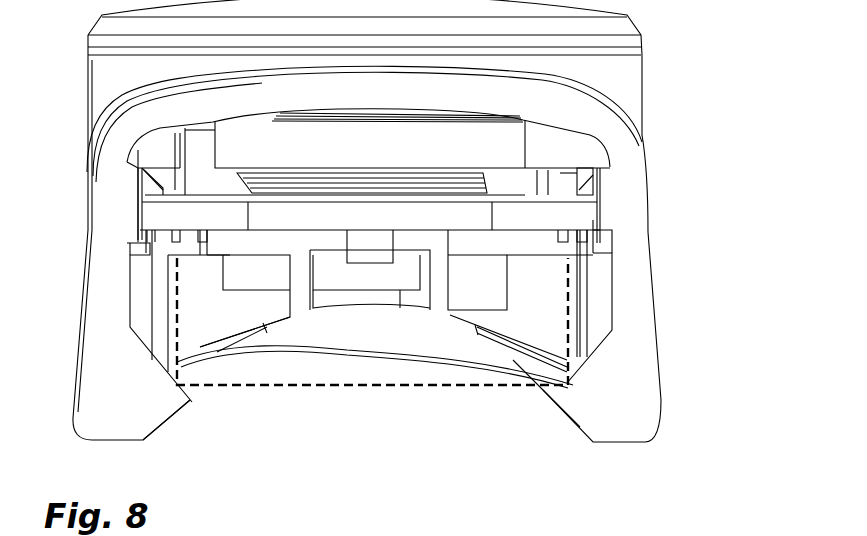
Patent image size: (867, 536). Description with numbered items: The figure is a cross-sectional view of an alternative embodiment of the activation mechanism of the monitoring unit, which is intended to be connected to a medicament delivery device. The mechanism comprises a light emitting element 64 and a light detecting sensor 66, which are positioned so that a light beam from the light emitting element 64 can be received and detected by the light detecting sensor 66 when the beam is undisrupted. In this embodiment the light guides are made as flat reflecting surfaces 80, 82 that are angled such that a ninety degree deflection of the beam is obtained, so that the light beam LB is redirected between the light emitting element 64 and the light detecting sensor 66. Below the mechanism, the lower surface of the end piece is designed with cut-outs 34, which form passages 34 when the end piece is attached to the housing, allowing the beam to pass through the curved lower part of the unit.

The cut-outs 34 is at (193, 373).
The light emitting element 64 is at (171, 242).
The light detecting sensor 66 is at (570, 247).
The flat reflecting surface 80 is at (148, 356).
The flat reflecting surface 82 is at (593, 357).
The lower boundary of light box LB is at (387, 385).